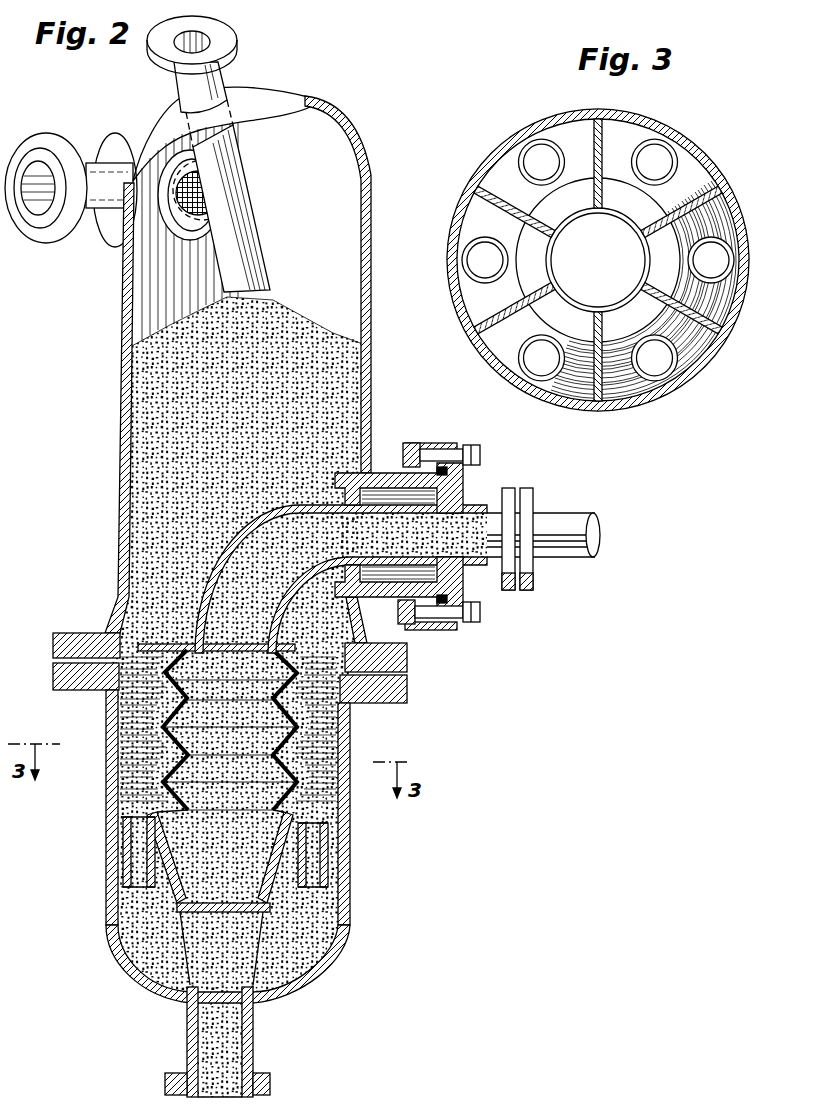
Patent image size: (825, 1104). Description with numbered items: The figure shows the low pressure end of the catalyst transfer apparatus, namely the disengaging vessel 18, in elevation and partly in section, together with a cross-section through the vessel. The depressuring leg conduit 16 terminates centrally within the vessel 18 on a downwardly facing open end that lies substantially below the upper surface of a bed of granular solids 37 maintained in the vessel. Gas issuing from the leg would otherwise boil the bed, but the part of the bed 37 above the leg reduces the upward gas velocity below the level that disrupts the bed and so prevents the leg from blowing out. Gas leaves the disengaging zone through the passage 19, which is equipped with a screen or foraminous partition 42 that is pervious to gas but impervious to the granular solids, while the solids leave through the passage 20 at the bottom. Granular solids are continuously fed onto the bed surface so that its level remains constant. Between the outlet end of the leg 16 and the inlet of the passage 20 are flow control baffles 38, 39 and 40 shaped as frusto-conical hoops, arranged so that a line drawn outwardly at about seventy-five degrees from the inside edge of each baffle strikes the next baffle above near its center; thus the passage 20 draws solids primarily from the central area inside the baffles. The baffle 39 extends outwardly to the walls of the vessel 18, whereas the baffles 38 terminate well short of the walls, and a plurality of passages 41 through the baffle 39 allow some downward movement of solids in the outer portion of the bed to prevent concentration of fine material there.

In FIG. 2, the depressuring leg conduit 16 is at (488, 568).
In FIG. 3, the disengaging vessel 18 is at (709, 362).
In FIG. 2, the gas outlet passage 19 is at (98, 232).
In FIG. 2, the granular solids outlet passage 20 is at (186, 1030).
In FIG. 2, the bed of granular solids 37 is at (136, 479).
In FIG. 2, the flow control baffles 38 is at (190, 644).
In FIG. 3, the flow control baffles 38 is at (600, 402).
In FIG. 2, the flow control baffle 39 is at (213, 860).
In FIG. 3, the flow control baffle 39 is at (572, 400).
In FIG. 2, the flow control baffle 40 is at (160, 897).
In FIG. 2, the passages 41 is at (121, 836).
In FIG. 3, the passages 41 is at (728, 292).
In FIG. 2, the screen or foraminous partition 42 is at (183, 246).